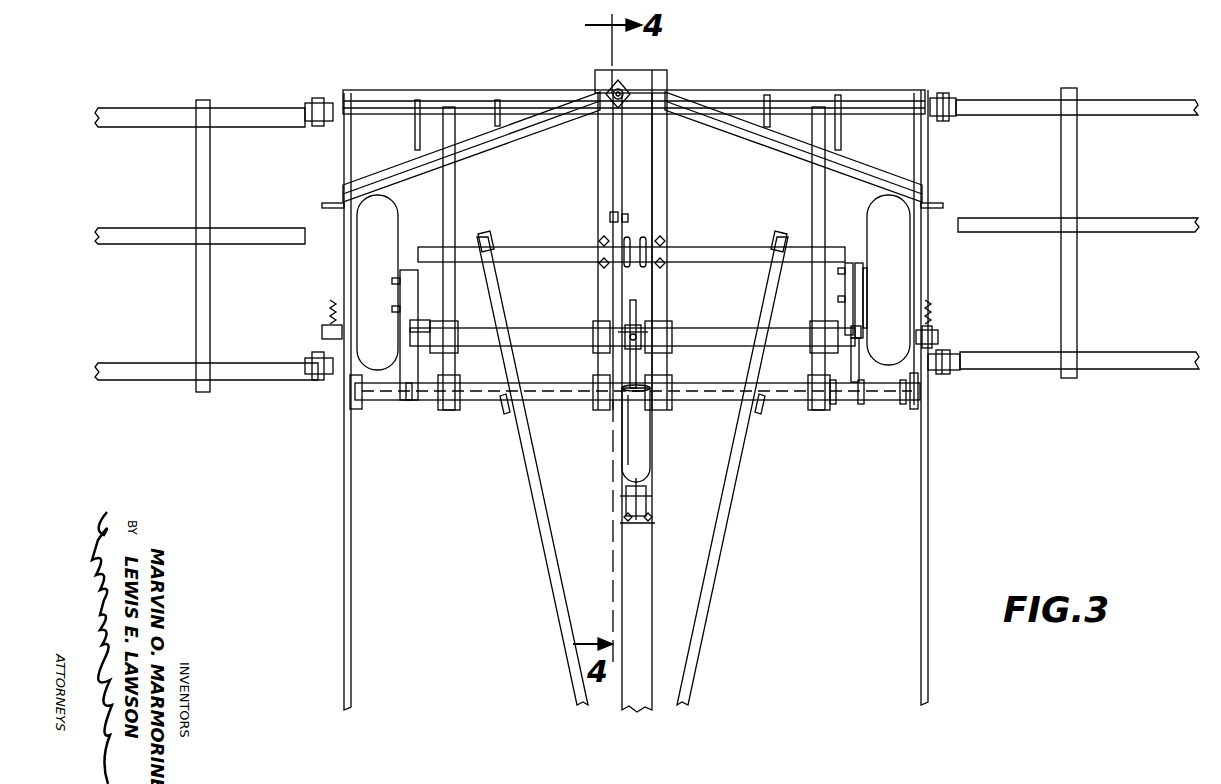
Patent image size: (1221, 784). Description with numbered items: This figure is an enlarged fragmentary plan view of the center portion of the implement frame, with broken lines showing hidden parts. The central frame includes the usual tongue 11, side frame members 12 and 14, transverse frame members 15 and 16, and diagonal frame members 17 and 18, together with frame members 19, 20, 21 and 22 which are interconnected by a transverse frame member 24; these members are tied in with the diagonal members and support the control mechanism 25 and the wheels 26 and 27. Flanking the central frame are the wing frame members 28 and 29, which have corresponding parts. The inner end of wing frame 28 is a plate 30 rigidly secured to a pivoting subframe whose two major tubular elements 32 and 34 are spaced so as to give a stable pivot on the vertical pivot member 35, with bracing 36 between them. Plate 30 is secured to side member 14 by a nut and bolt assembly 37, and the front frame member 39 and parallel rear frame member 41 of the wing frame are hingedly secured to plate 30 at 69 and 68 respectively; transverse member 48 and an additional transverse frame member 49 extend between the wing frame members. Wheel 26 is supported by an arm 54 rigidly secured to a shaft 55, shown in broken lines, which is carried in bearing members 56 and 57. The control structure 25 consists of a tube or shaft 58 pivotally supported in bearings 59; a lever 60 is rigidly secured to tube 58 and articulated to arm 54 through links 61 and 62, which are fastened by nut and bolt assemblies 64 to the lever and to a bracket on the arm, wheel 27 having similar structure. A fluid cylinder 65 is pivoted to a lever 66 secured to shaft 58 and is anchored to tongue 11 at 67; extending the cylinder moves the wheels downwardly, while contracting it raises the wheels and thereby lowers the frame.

The tongue 11 is at (652, 587).
The side frame member 12 is at (352, 607).
The side frame member 14 is at (929, 565).
The transverse frame member 15 is at (706, 386).
The transverse frame member 16 is at (778, 120).
The diagonal frame member 17 is at (537, 461).
The diagonal frame member 18 is at (746, 462).
The frame member 19 is at (456, 190).
The frame member 20 is at (597, 176).
The frame member 21 is at (667, 189).
The frame member 22 is at (811, 179).
The transverse frame member 24 is at (720, 246).
The control mechanism 25 is at (562, 322).
The wheel 26 is at (912, 263).
The wheel 27 is at (358, 272).
The flanking frame member 28 is at (1077, 277).
The flanking frame member 29 is at (246, 398).
The plate 30 is at (929, 292).
The subframe element 32 is at (802, 92).
The subframe element 34 is at (722, 132).
The vertical pivot member 35 is at (622, 86).
The bracing 36 is at (842, 129).
The nut and bolt assembly 37 is at (938, 336).
The front frame member 39 is at (1022, 372).
The rear frame member 41 is at (1002, 112).
The transverse member 48 is at (1078, 176).
The additional transverse frame member 49 is at (1034, 217).
The arm 54 is at (858, 368).
The shaft 55 is at (866, 402).
The bearing member 56 is at (905, 402).
The bearing member 57 is at (840, 402).
The tube or shaft 58 is at (712, 328).
The bearings 59 is at (668, 330).
The lever 60 is at (851, 320).
The link 61 is at (846, 285).
The link 62 is at (858, 263).
The nut and bolt assemblies 64 is at (865, 274).
The fluid cylinder 65 is at (640, 436).
The lever 66 is at (636, 312).
The anchor 67 is at (650, 508).
The hinge 68 is at (950, 384).
The hinge 69 is at (955, 86).